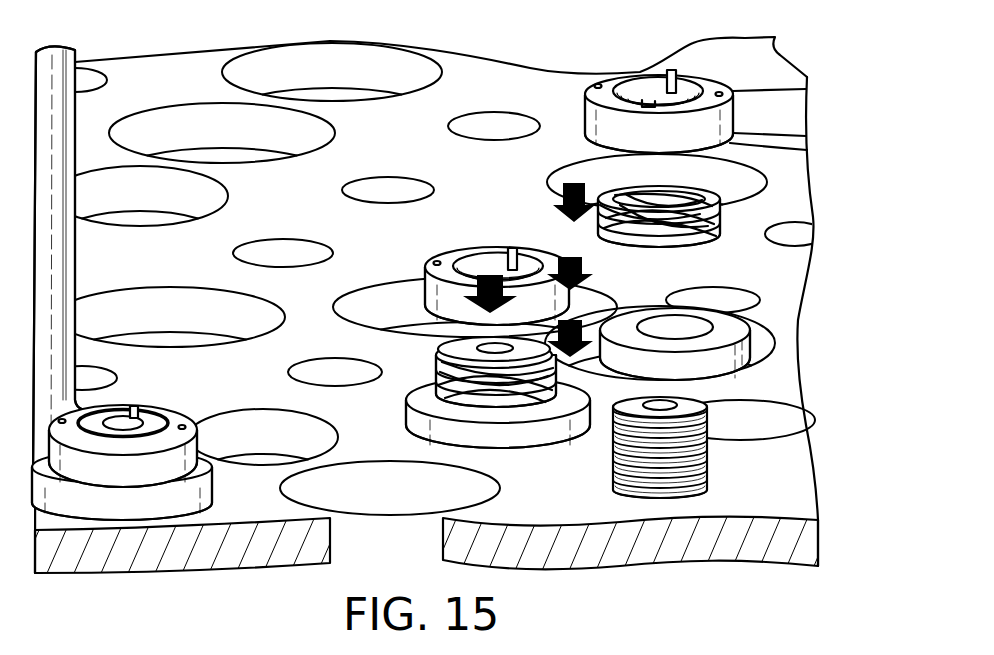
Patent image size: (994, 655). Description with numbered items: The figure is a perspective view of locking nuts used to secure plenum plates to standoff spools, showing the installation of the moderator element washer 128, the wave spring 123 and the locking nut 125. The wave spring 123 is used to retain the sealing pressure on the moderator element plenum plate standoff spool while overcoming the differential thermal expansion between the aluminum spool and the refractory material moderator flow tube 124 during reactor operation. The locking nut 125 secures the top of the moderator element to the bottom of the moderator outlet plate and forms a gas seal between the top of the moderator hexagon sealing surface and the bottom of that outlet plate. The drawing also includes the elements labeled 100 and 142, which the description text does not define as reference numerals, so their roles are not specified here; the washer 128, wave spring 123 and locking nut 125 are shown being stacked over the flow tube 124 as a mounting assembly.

The post 100 is at (65, 114).
The wave spring 123 is at (740, 215).
The moderator flow tube 124 is at (733, 416).
The locking nut 125 is at (717, 82).
The moderator element washer 128 is at (730, 330).
The plate 142 is at (767, 497).